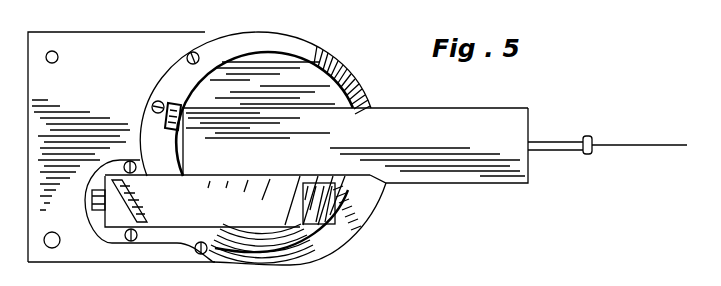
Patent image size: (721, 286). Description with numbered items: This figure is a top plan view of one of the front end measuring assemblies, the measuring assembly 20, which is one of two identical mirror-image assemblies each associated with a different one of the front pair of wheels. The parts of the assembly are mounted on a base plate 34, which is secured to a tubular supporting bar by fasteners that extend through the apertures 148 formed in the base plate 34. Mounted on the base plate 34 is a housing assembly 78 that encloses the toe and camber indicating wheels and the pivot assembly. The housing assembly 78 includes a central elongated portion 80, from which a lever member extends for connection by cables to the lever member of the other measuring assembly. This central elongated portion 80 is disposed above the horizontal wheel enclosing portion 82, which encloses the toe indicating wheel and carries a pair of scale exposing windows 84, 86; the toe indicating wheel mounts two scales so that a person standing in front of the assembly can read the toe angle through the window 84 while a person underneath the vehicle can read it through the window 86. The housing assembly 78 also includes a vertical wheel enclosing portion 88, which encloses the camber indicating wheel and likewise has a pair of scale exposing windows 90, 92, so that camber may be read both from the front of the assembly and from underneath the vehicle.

The base plate 34 is at (93, 52).
The apertures 148 is at (57, 61).
The measuring assembly 20 is at (366, 63).
The horizontal wheel enclosing portion 82 is at (264, 114).
The scale exposing window 84 is at (186, 105).
The central elongated portion 80 is at (316, 142).
The housing assembly 78 is at (402, 108).
The vertical wheel enclosing portion 88 is at (215, 211).
The scale exposing window 92 is at (140, 217).
The scale exposing window 86 is at (362, 200).
The scale exposing window 90 is at (334, 226).